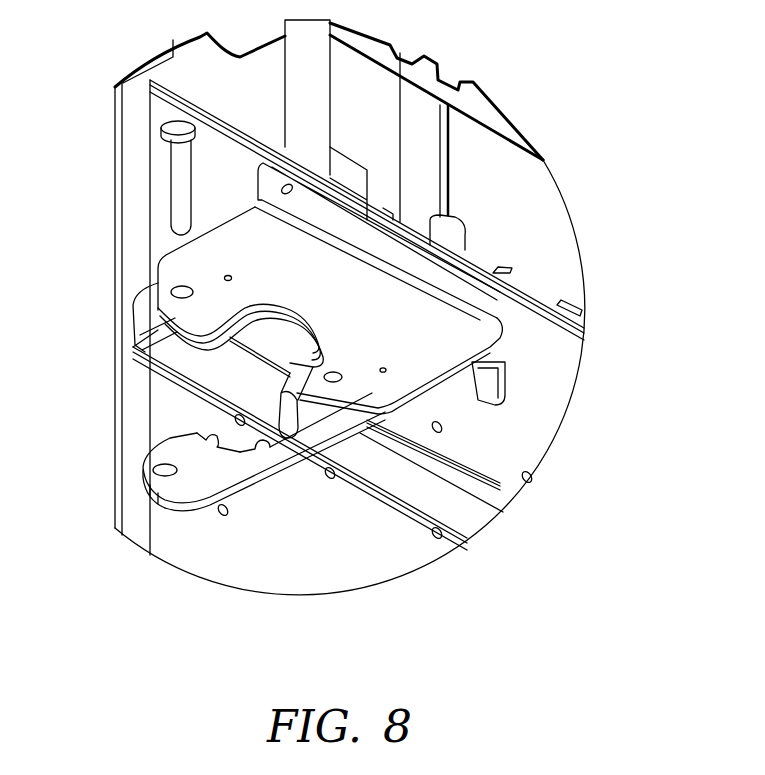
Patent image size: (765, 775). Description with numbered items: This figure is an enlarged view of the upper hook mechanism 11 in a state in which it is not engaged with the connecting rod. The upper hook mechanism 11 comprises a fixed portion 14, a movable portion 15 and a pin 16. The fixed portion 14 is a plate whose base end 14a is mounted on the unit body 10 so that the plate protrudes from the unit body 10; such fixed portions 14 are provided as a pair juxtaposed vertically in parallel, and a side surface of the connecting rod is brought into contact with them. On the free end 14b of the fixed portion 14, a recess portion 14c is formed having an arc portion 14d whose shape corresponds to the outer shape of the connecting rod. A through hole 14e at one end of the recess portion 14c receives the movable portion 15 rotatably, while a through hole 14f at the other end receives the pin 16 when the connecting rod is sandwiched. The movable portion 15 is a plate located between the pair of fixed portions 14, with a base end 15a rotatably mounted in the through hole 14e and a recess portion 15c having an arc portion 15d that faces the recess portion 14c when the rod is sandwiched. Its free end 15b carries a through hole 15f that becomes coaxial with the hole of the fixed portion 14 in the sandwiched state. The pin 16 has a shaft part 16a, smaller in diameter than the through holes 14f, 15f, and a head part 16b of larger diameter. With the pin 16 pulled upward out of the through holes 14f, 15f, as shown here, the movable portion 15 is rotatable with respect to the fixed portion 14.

The unit body 10 is at (530, 350).
The upper hook mechanism 11 is at (248, 158).
The fixed portion 14 is at (313, 323).
The base end 14a is at (450, 290).
The free end 14b is at (177, 332).
The recess portion 14c is at (243, 337).
The arc portion 14d is at (297, 327).
The through hole 14e is at (333, 372).
The through hole 14f is at (172, 290).
The movable portion 15 is at (214, 512).
The base end 15a is at (368, 420).
The free end 15b is at (168, 490).
The recess portion 15c is at (215, 447).
The arc portion 15d is at (262, 445).
The through hole 15f is at (160, 470).
The pin 16 is at (119, 175).
The shaft part 16a is at (178, 206).
The head part 16b is at (168, 125).